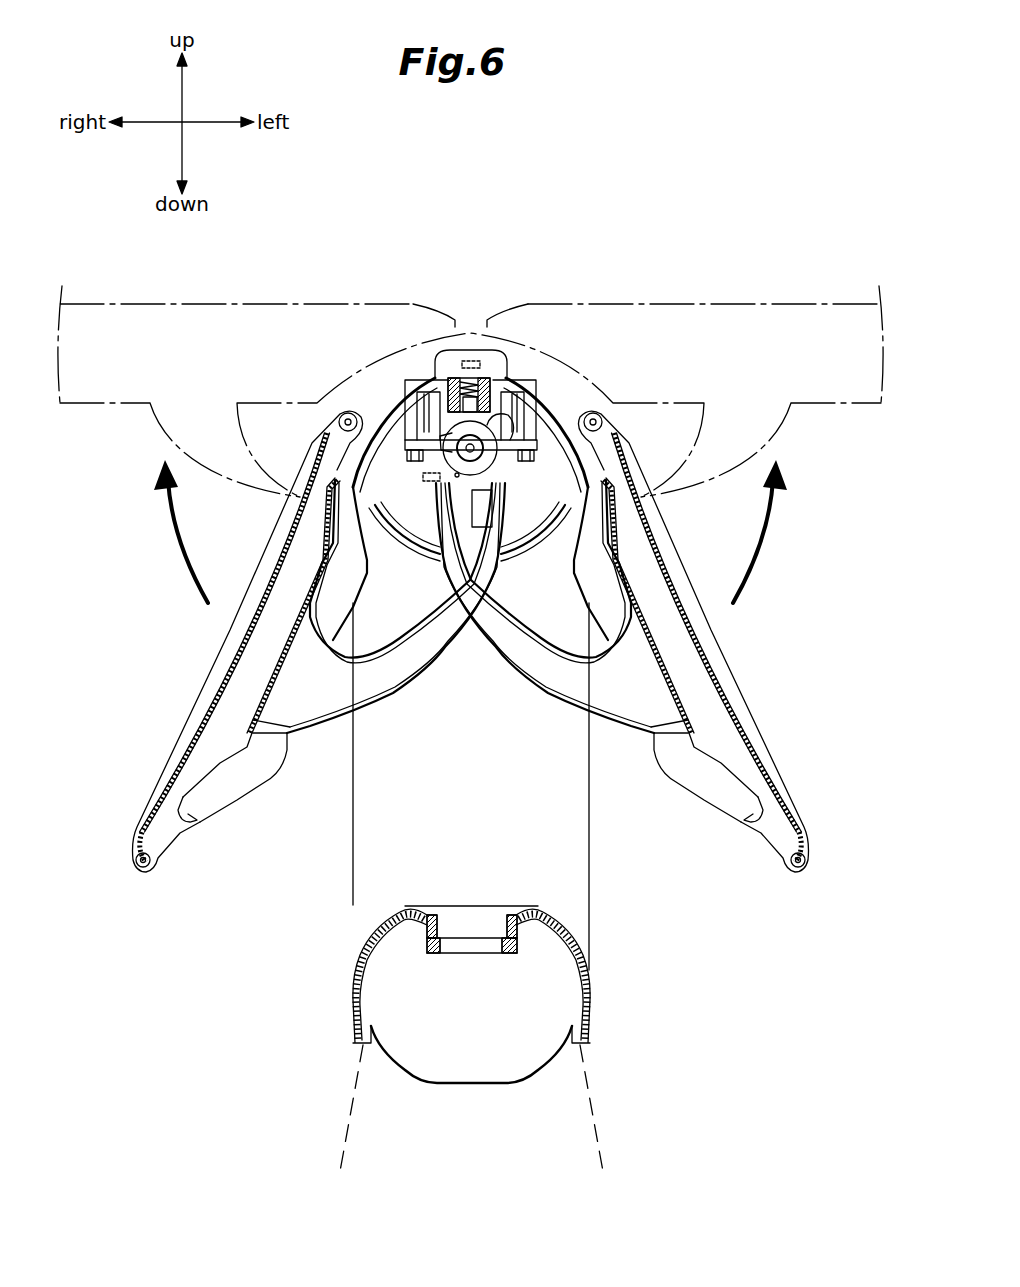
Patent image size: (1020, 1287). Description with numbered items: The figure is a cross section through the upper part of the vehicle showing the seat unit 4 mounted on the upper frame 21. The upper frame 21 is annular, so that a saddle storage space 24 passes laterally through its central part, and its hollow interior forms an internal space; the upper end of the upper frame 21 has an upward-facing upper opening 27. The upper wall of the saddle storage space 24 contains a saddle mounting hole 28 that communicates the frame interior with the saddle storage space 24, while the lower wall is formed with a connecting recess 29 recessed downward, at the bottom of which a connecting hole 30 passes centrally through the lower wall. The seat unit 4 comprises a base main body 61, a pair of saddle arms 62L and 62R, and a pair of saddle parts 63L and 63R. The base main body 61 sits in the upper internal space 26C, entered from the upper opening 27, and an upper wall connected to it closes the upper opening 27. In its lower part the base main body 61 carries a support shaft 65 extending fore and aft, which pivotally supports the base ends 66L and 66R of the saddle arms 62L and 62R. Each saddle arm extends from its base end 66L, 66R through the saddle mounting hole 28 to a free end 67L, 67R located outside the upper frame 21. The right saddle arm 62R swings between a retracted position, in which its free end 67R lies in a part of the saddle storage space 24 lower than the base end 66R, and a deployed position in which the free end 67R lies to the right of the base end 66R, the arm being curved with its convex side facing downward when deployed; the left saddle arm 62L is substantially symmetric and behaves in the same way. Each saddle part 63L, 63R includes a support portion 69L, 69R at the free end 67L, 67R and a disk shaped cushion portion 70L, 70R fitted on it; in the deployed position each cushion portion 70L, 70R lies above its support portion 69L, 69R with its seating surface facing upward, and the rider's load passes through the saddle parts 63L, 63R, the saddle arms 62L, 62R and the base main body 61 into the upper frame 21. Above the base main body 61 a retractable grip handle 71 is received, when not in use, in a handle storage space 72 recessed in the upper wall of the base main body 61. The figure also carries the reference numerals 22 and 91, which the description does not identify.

The seat unit 4 is at (768, 644).
The upper frame 21 is at (363, 902).
The lower body 22 is at (592, 1112).
The saddle storage space 24 is at (483, 835).
The upper internal space 26C is at (585, 392).
The upper opening 27 is at (540, 390).
The saddle mounting hole 28 is at (530, 520).
The connecting recess 29 is at (440, 925).
The connecting hole 30 is at (450, 955).
The base main body 61 is at (387, 440).
The right saddle arm 62R is at (390, 690).
The left saddle arm 62L is at (551, 690).
The right saddle part 63R is at (237, 812).
The left saddle part 63L is at (705, 812).
The support shaft 65 is at (418, 418).
The base end of right saddle arm 66R is at (441, 452).
The base end of left saddle arm 66L is at (493, 457).
The free end of right saddle arm 67R is at (327, 703).
The free end of left saddle arm 67L is at (622, 697).
The right support portion 69R is at (213, 793).
The left support portion 69L is at (723, 793).
The right cushion portion 70R is at (181, 742).
The left cushion portion 70L is at (760, 733).
The grip handle 71 is at (468, 348).
The handle storage space 72 is at (437, 360).
The stopper 91 is at (432, 484).